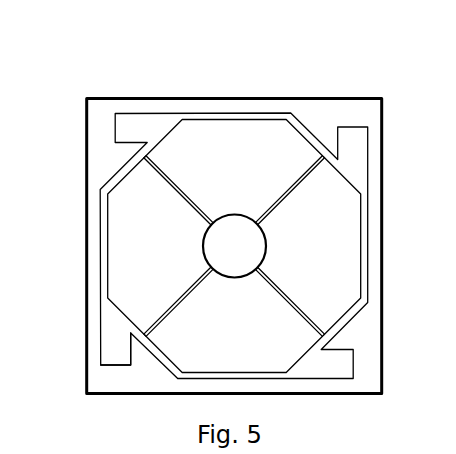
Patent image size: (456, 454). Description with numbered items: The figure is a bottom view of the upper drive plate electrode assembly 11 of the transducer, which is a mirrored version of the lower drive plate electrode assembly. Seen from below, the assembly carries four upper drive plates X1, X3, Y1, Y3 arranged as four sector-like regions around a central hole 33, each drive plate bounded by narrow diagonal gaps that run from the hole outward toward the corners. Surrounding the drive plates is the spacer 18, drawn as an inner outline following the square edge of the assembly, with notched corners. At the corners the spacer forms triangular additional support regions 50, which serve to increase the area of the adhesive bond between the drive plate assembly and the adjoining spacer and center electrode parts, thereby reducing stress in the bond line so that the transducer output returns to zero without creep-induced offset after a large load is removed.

The upper drive plate electrode assembly 11 is at (213, 89).
The spacer 18 is at (94, 225).
The triangular additional support region 50 is at (138, 353).
The hole 33 is at (235, 278).
The upper drive plate X3 is at (127, 208).
The upper drive plate Y3 is at (237, 145).
The upper drive plate X1 is at (330, 265).
The upper drive plate Y1 is at (283, 348).